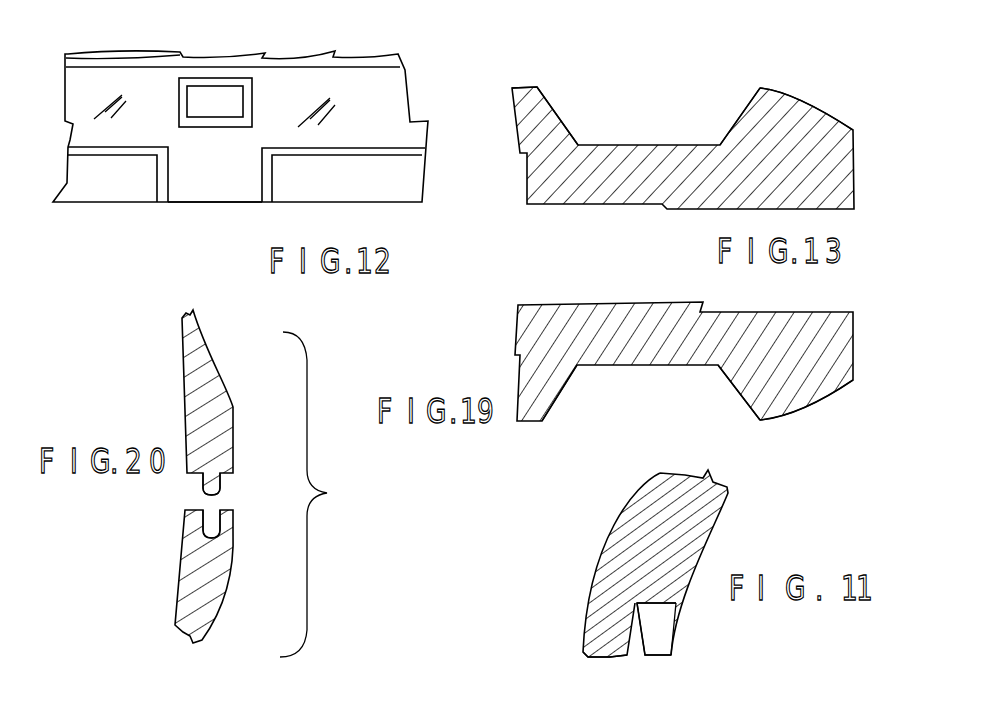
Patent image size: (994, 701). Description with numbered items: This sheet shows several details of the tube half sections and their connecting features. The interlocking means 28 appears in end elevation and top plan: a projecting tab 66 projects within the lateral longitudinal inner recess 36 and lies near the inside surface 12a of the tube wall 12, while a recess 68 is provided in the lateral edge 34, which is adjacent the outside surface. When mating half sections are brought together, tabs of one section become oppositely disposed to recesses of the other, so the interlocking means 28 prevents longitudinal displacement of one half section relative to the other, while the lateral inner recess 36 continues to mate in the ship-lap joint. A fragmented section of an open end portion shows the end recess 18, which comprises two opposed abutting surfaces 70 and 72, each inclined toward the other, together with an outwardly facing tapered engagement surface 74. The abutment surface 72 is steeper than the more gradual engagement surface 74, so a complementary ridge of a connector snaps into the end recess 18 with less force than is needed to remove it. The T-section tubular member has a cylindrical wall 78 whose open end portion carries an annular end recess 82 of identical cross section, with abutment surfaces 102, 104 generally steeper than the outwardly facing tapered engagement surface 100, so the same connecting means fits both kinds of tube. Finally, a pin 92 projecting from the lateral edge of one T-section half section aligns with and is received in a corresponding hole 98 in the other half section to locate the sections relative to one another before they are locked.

In FIG. 13, the tubular member wall 12 is at (553, 193).
In FIG. 11, the tubular member wall 12 is at (637, 505).
In FIG. 12, the inside surface 12a is at (85, 58).
In FIG. 13, the end recess 18 is at (687, 136).
In FIG. 12, the interlocking means 28 is at (226, 132).
In FIG. 11, the interlocking means 28 is at (616, 576).
In FIG. 12, the lateral edge 34 is at (82, 180).
In FIG. 11, the lateral edge 34 is at (602, 656).
In FIG. 12, the lateral longitudinal inner recess 36 is at (367, 85).
In FIG. 11, the lateral longitudinal inner recess 36 is at (677, 617).
In FIG. 12, the projecting tab 66 is at (222, 97).
In FIG. 11, the projecting tab 66 is at (660, 642).
In FIG. 12, the recess 68 is at (210, 182).
In FIG. 13, the abutting surface 70 is at (558, 108).
In FIG. 13, the tapered annular abutment surface 72 is at (747, 100).
In FIG. 13, the tapered engagement surface 74 is at (795, 106).
In FIG. 19, the cylindrical wall 78 is at (535, 322).
In FIG. 20, the cylindrical wall 78 is at (196, 392).
In FIG. 19, the annular end recess 82 is at (671, 382).
In FIG. 20, the pin 92 is at (205, 488).
In FIG. 20, the hole 98 is at (222, 510).
In FIG. 19, the tapered engagement surface 100 is at (803, 387).
In FIG. 19, the abutment surface 102 is at (557, 392).
In FIG. 19, the abutment surface 104 is at (737, 387).